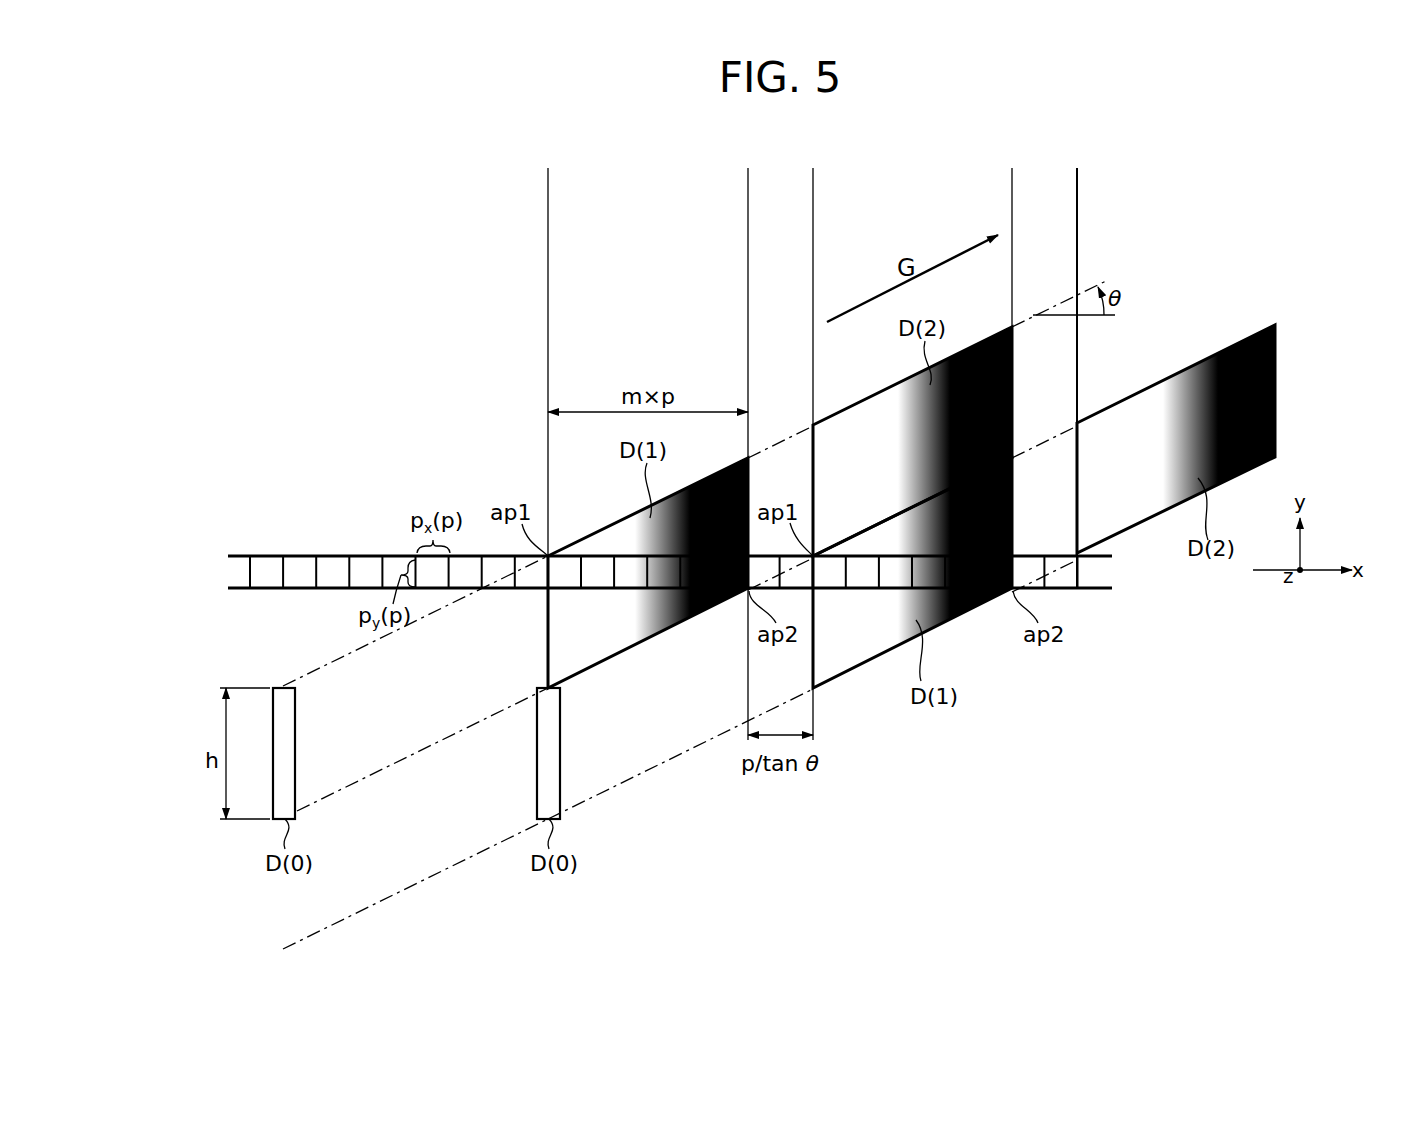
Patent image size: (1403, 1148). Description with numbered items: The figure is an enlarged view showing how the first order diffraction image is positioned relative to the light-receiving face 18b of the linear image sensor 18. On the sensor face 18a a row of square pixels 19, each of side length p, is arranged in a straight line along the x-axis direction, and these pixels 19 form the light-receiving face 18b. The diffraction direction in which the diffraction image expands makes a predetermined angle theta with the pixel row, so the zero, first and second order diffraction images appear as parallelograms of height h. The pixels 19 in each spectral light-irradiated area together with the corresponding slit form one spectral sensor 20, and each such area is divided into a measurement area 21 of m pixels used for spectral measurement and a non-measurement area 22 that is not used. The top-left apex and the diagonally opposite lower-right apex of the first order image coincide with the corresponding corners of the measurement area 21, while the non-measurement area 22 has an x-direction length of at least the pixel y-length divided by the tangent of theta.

The linear image sensor 18 is at (670, 550).
The sensor face 18a is at (352, 536).
The light-receiving face 18b is at (274, 553).
The pixels 19 is at (630, 583).
The spectral sensor 20 is at (813, 175).
The measurement area 21 is at (548, 223).
The non-measurement area 22 is at (813, 223).